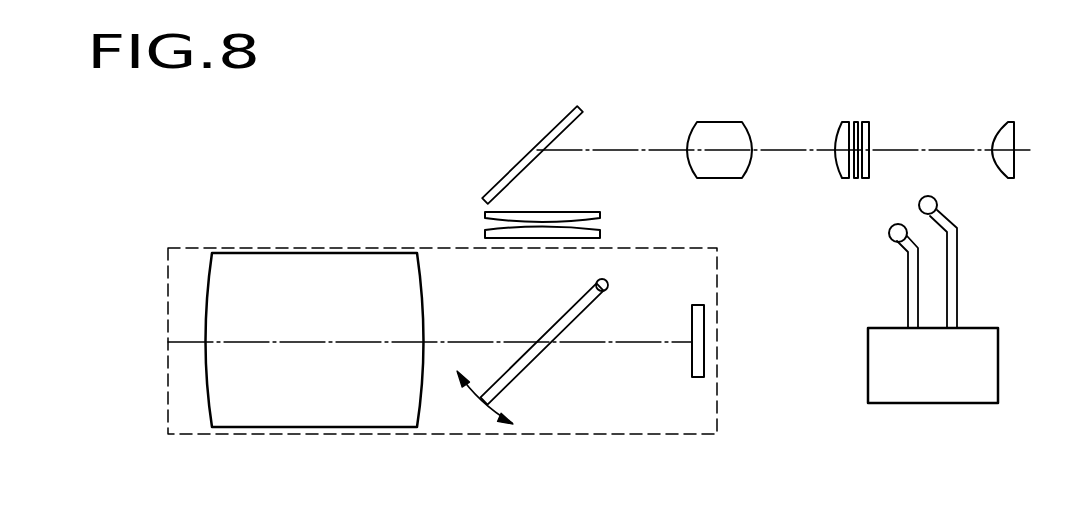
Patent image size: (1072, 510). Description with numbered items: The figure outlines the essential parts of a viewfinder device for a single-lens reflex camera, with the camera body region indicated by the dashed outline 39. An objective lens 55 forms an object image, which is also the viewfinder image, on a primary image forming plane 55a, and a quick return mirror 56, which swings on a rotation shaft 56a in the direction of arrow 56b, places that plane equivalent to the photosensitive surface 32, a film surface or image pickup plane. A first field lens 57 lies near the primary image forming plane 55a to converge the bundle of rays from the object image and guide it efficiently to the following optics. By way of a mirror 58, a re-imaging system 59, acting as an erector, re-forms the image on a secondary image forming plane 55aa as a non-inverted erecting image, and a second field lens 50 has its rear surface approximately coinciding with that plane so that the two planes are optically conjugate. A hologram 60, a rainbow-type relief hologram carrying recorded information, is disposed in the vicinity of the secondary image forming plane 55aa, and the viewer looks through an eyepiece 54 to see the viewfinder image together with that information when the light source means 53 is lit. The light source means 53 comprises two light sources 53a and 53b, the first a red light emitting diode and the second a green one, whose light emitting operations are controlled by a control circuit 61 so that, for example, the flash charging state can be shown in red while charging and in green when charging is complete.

The photosensitive surface 32 is at (704, 332).
The housing 39 is at (204, 247).
The second field lens 50 is at (842, 120).
The light source means 53 is at (972, 262).
The light source 53a is at (938, 197).
The light source 53b is at (948, 276).
The eyepiece 54 is at (1010, 120).
The objective lens 55 is at (316, 252).
The primary image forming plane 55a is at (490, 238).
The secondary image forming plane 55aa is at (855, 122).
The quick return mirror 56 is at (520, 376).
The rotation shaft 56a is at (607, 281).
The arrow 56b is at (477, 412).
The first field lens 57 is at (525, 213).
The mirror 58 is at (558, 120).
The re-imaging system 59 is at (722, 122).
The hologram 60 is at (870, 118).
The control circuit 61 is at (968, 403).